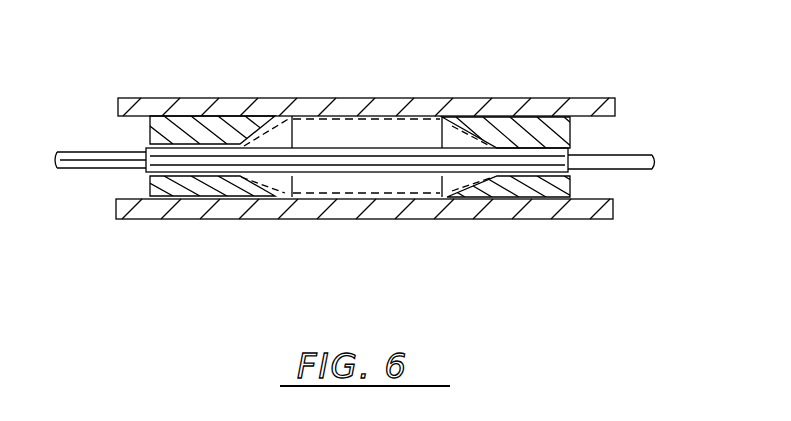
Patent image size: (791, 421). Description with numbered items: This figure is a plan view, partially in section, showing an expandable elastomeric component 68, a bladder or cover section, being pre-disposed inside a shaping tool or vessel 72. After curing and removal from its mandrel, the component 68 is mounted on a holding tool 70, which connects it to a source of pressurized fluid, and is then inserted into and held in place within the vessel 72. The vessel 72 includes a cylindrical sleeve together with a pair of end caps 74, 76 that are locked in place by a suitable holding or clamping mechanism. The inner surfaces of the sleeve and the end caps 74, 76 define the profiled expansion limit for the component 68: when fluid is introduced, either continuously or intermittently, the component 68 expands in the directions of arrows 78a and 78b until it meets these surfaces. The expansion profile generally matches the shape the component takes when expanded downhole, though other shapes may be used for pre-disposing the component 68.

The elastomeric component 68 is at (143, 167).
The holding tool 70 is at (627, 163).
The shaping tool or vessel 72 is at (481, 108).
The end cap 74 is at (200, 197).
The end cap 76 is at (582, 103).
The arrow 78a is at (377, 142).
The arrow 78b is at (375, 176).